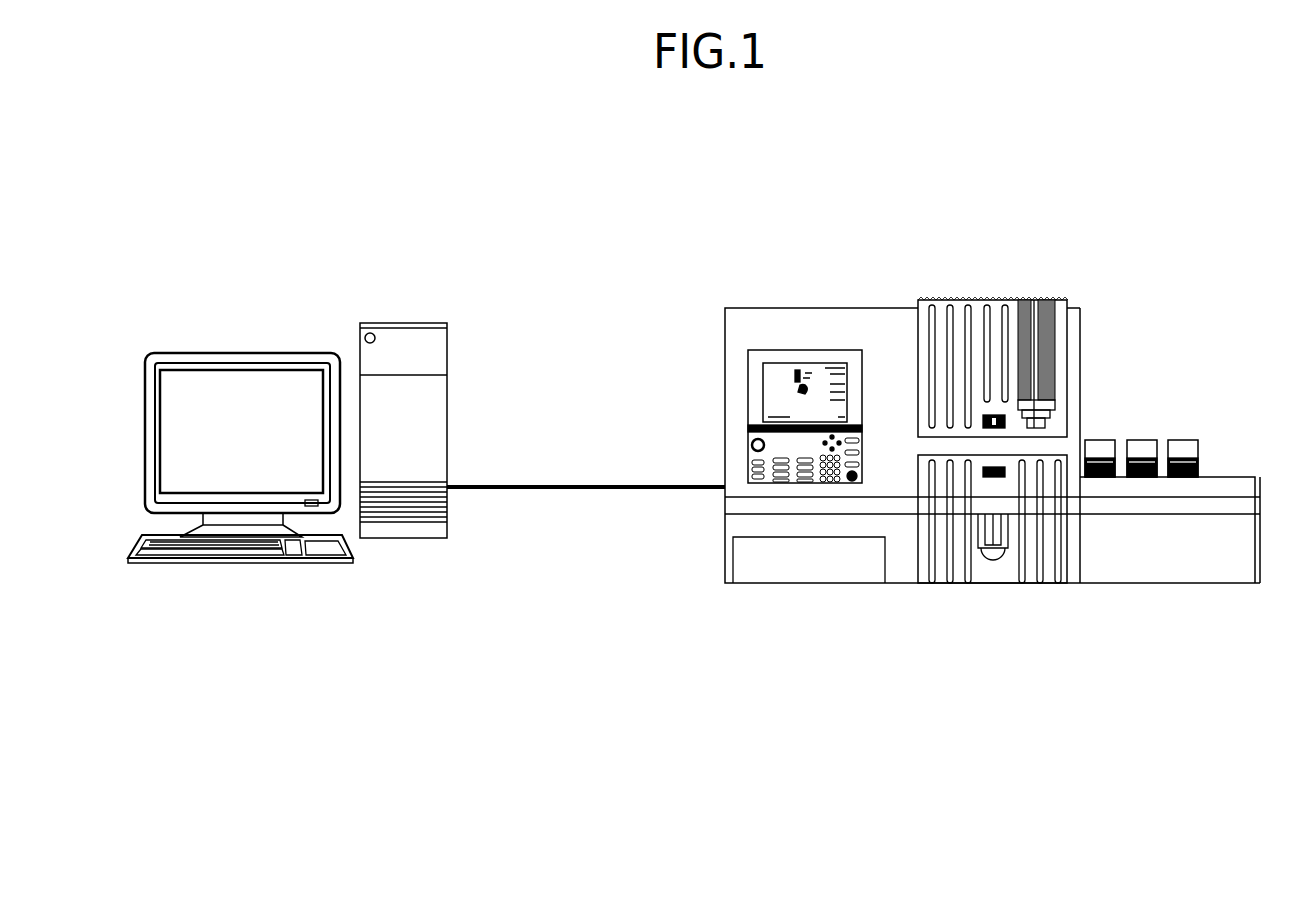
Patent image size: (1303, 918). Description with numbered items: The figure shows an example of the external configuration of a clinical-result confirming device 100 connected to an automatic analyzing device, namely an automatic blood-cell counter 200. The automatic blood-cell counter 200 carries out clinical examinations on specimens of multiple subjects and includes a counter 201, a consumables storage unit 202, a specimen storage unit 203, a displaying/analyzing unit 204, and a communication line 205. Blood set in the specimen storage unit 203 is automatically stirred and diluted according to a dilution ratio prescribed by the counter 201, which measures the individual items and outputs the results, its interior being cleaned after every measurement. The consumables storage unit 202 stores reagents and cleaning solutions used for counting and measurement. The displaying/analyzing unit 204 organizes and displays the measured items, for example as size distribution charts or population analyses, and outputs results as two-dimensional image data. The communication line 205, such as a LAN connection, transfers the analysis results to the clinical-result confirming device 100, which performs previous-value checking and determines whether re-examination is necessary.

The clinical-result confirming device 100 is at (433, 278).
The automatic blood-cell counter 200 is at (937, 236).
The counter 201 is at (868, 326).
The consumables storage unit 202 is at (1028, 300).
The specimen storage unit 203 is at (1143, 428).
The displaying/analyzing unit 204 is at (752, 396).
The communication line 205 is at (588, 486).